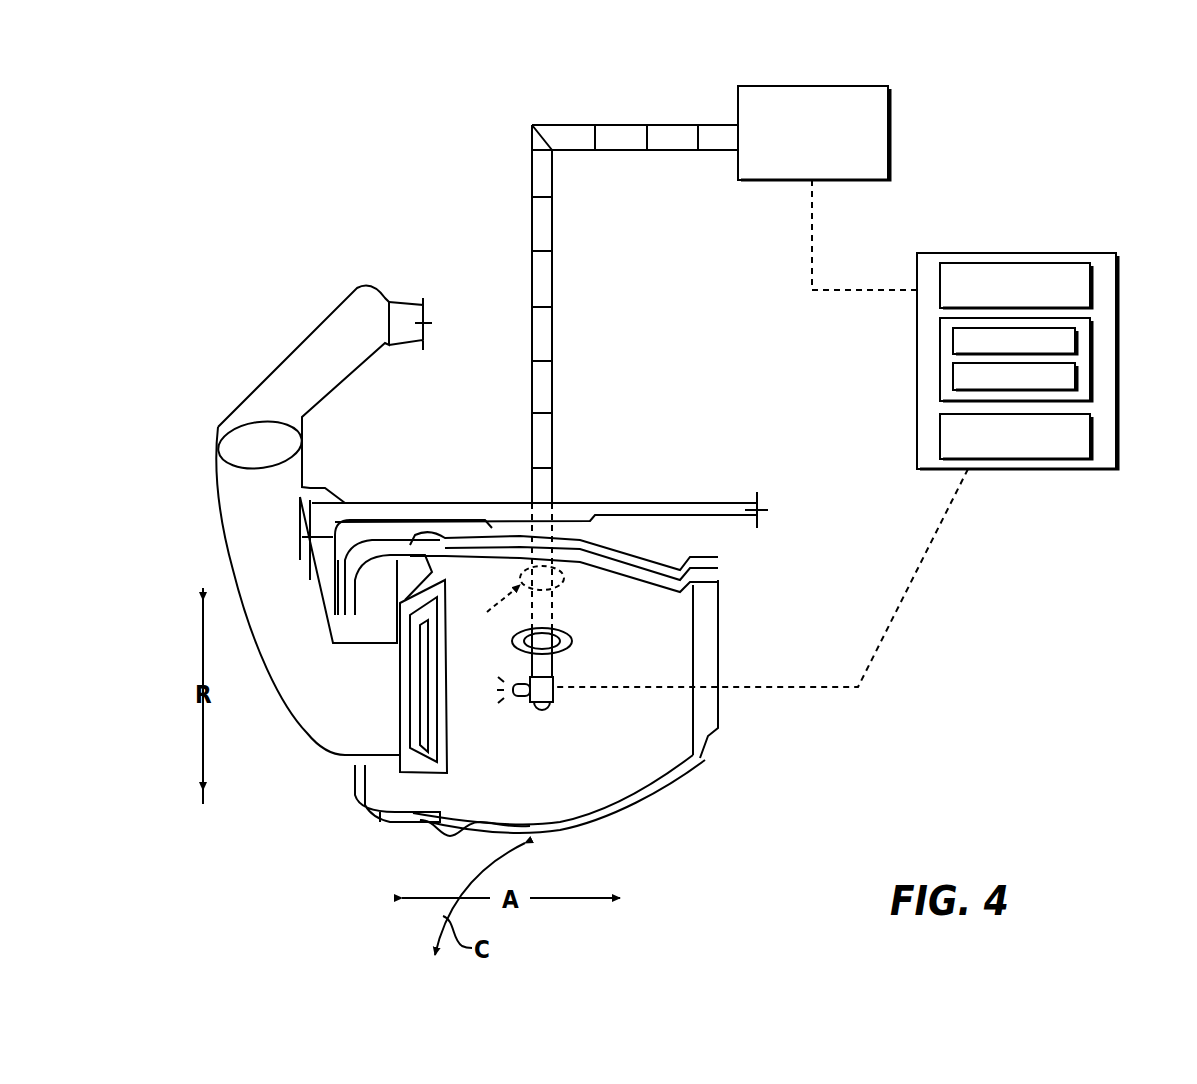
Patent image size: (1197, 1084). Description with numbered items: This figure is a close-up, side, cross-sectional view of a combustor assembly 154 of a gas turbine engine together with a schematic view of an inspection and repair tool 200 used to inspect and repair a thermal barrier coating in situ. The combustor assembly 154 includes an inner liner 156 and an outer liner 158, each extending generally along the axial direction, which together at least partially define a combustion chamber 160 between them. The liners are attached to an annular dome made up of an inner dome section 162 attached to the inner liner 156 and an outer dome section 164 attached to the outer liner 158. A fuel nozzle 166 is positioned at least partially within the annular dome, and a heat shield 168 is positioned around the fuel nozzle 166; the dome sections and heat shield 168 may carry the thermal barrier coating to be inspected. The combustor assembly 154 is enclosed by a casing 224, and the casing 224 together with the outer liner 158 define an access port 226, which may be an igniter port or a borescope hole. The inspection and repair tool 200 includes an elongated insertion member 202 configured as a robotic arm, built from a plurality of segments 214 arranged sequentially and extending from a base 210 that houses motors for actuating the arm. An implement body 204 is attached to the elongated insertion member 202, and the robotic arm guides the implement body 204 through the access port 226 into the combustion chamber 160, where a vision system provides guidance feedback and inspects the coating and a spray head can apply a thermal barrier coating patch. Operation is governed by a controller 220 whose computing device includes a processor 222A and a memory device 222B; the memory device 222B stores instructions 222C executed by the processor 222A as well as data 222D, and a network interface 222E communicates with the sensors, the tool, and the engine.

The inspection and repair tool 200 is at (437, 125).
The elongated insertion member 202 is at (495, 282).
The base 210 is at (814, 133).
The segments 214 is at (553, 396).
The casing 224 is at (697, 503).
The combustor assembly 154 is at (625, 455).
The outer liner 158 is at (620, 556).
The inner liner 156 is at (600, 815).
The combustion chamber 160 is at (659, 713).
The outer dome section 164 is at (352, 572).
The heat shield 168 is at (455, 752).
The fuel nozzle 166 is at (290, 752).
The inner dome section 162 is at (378, 815).
The implement body 204 is at (553, 700).
The access port 226 is at (515, 643).
The controller 220 is at (1116, 283).
The processor 222A is at (1016, 285).
The memory device 222B is at (940, 328).
The instructions 222C is at (953, 345).
The data 222D is at (953, 377).
The network interface 222E is at (1016, 436).